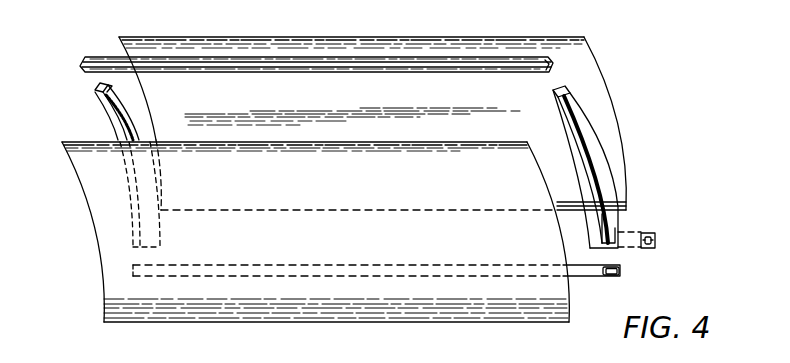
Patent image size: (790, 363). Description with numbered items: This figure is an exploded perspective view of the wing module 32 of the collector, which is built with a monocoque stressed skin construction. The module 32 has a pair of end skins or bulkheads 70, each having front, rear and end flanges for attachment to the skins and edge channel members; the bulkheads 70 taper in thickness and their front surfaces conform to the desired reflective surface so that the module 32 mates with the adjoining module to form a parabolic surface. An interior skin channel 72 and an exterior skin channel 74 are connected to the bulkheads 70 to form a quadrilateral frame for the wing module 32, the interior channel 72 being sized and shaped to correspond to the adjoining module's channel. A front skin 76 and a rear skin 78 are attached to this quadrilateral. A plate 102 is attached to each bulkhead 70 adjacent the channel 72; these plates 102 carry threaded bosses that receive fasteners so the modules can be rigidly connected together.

The wing module 32 is at (376, 179).
The end bulkheads 70 is at (104, 111).
The interior skin channel 72 is at (590, 271).
The exterior skin channel 74 is at (334, 72).
The front skin 76 is at (103, 293).
The rear skin 78 is at (602, 72).
The plate 102 is at (651, 232).